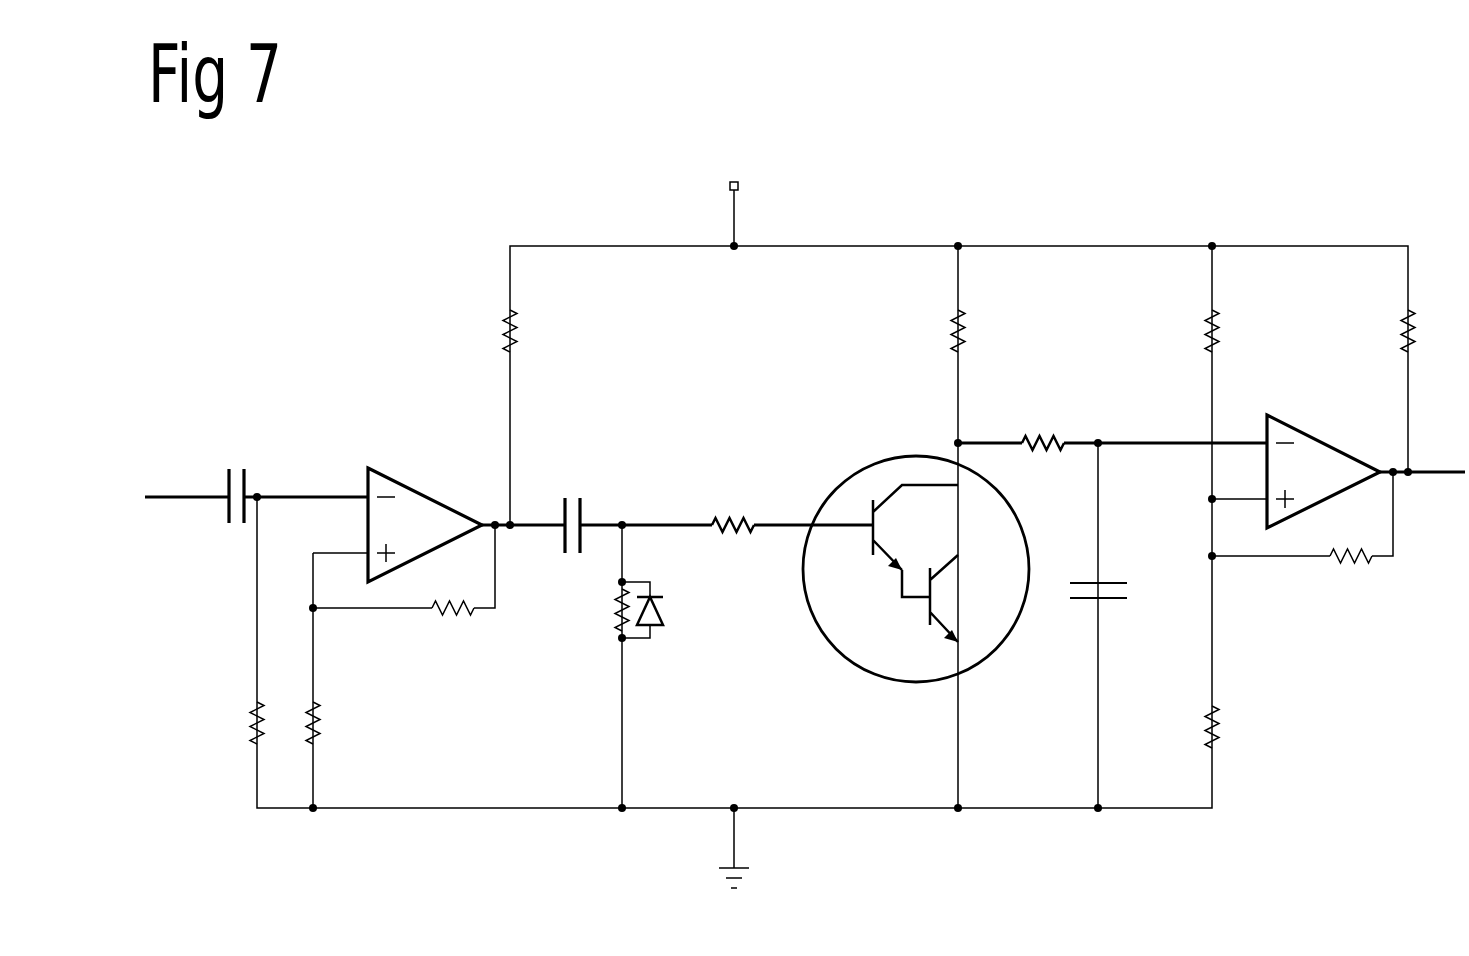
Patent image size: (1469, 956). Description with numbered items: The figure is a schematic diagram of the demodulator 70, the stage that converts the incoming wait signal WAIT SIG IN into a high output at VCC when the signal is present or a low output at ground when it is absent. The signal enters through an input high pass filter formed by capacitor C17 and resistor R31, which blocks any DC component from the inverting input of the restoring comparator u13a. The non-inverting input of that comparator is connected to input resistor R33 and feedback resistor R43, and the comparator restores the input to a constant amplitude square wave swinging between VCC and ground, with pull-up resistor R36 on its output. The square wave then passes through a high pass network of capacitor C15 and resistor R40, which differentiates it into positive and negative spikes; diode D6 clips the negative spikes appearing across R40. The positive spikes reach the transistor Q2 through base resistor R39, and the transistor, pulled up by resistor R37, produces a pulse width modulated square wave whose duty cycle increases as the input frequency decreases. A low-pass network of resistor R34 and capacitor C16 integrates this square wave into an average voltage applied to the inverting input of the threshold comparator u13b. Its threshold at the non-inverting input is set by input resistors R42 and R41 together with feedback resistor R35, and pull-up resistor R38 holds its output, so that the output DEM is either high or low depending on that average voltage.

The demodulator 70 is at (793, 512).
The capacitor C17 is at (237, 477).
The restoring comparator u13a is at (425, 525).
The feedback resistor R43 is at (452, 595).
The resistor R31 is at (226, 723).
The input resistor R33 is at (343, 723).
The pull-up resistor R36 is at (478, 331).
The capacitor C15 is at (570, 507).
The base resistor R39 is at (732, 511).
The resistor R40 is at (590, 610).
The diode D6 is at (673, 611).
The transistor Q2 is at (916, 569).
The pull-up resistor R37 is at (926, 331).
The resistor R34 is at (1041, 428).
The capacitor C16 is at (1114, 573).
The input resistor R42 is at (1180, 331).
The input resistor R41 is at (1180, 727).
The pull-up resistor R38 is at (1377, 331).
The threshold comparator u13b is at (1323, 471).
The feedback resistor R35 is at (1350, 542).